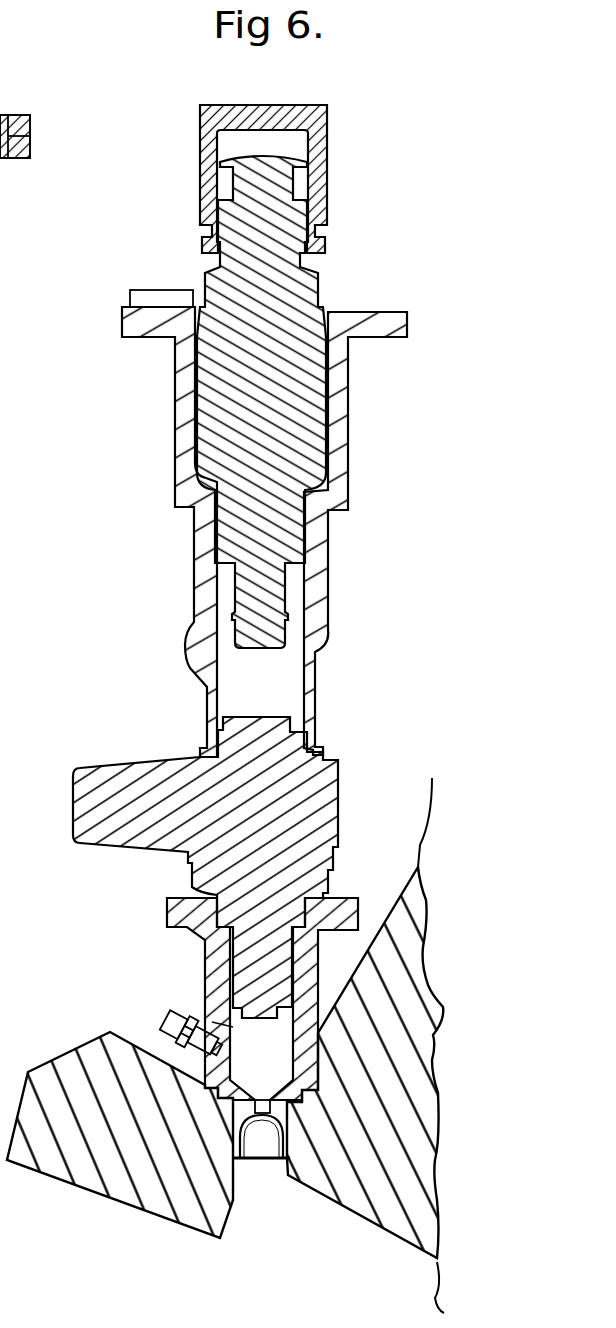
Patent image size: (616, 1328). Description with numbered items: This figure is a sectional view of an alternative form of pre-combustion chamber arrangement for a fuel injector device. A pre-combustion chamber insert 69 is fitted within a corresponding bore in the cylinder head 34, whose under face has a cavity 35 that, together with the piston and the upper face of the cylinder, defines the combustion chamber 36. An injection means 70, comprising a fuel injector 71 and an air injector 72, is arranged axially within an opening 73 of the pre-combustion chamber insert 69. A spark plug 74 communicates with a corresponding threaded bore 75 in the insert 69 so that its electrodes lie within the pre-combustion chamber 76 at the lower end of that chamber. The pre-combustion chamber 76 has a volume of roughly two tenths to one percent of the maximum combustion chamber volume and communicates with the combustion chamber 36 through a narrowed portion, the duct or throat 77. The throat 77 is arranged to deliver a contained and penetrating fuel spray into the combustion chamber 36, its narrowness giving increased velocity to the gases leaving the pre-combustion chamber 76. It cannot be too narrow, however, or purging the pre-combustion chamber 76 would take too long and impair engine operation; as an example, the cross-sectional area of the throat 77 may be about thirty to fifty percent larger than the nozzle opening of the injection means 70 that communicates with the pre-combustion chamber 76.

The cylinder head 34 is at (405, 1093).
The cavity 35 is at (295, 1177).
The combustion chamber 36 is at (314, 1254).
The pre-combustion chamber insert 69 is at (332, 918).
The injection means 70 is at (390, 437).
The fuel injector 71 is at (293, 296).
The air injector 72 is at (123, 787).
The opening 73 is at (207, 940).
The spark plug 74 is at (175, 1027).
The threaded bore 75 is at (233, 1027).
The pre-combustion chamber 76 is at (273, 1048).
The throat 77 is at (265, 1110).